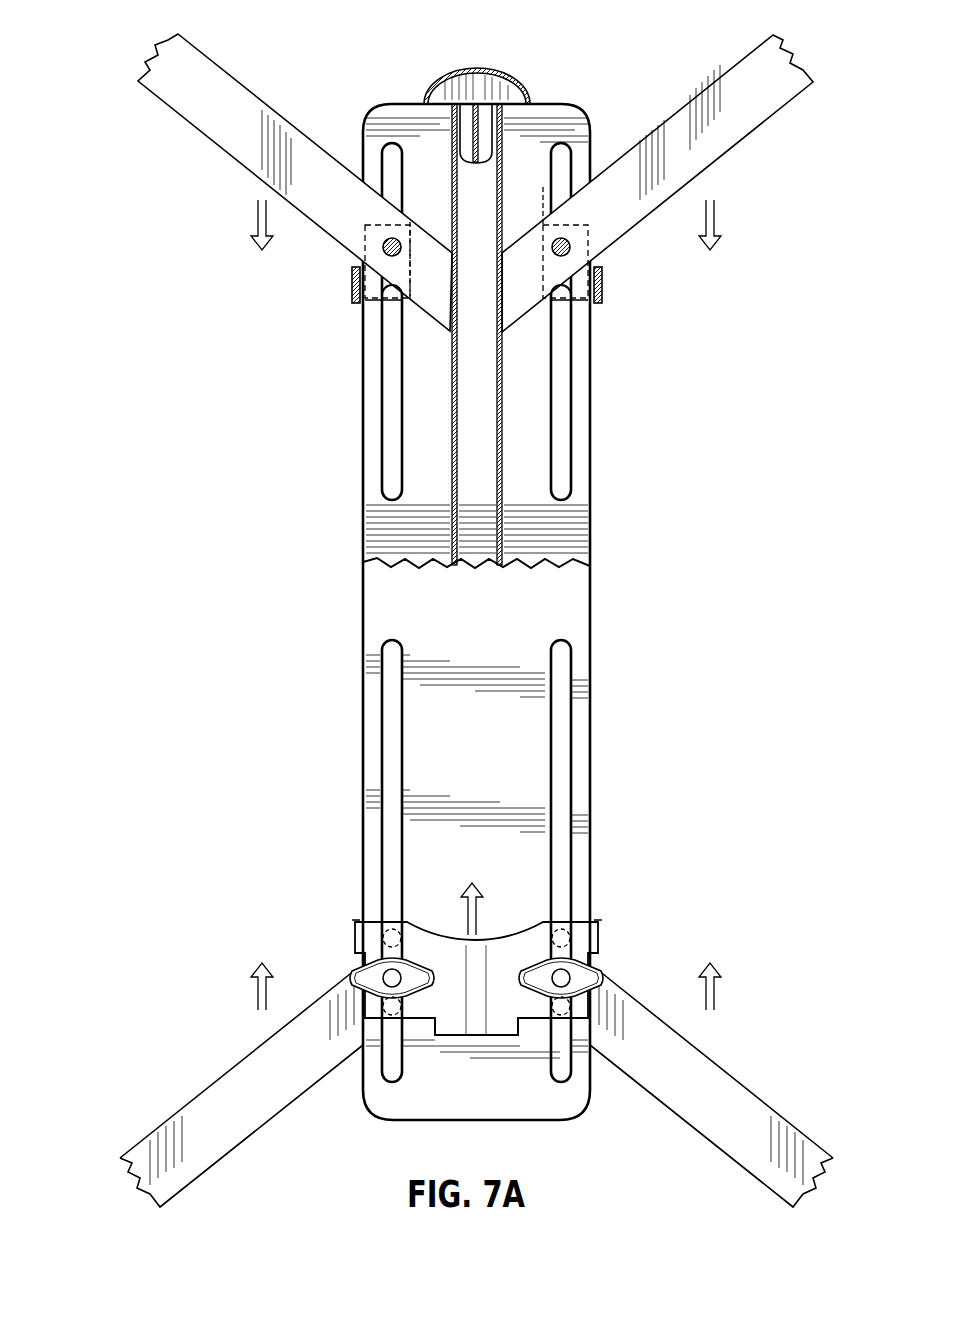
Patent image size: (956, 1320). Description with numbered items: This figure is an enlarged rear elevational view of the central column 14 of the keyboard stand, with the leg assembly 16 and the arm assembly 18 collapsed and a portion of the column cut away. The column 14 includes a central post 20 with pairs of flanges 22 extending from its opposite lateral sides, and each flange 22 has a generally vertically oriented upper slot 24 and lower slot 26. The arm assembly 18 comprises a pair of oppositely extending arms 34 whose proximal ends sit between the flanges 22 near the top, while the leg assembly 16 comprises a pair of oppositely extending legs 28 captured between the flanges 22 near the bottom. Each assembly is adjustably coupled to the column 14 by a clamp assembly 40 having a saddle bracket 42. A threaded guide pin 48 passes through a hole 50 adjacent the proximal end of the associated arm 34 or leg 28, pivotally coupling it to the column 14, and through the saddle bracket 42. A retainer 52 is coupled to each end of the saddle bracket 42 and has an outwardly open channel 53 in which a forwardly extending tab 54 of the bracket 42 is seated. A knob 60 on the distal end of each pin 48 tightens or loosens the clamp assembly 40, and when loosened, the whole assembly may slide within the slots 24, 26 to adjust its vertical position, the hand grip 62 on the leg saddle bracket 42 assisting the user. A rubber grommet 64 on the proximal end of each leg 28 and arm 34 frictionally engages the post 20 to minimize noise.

The central column 14 is at (361, 536).
The leg assembly 16 is at (476, 1085).
The arm assembly 18 is at (469, 183).
The central post 20 is at (452, 455).
The flanges 22 is at (516, 446).
The upper slot 24 is at (382, 407).
The lower slot 26 is at (382, 753).
The legs 28 is at (200, 1100).
The arms 34 is at (237, 152).
The clamp assembly 40 is at (498, 934).
The saddle bracket 42 is at (461, 988).
The guide pin 48 is at (384, 245).
The hole 50 is at (390, 238).
The retainer 52 is at (392, 302).
The channel 53 is at (359, 306).
The tabs 54 is at (352, 286).
The knob 60 is at (356, 972).
The hand grip 62 is at (472, 1036).
The grommet 64 is at (499, 284).